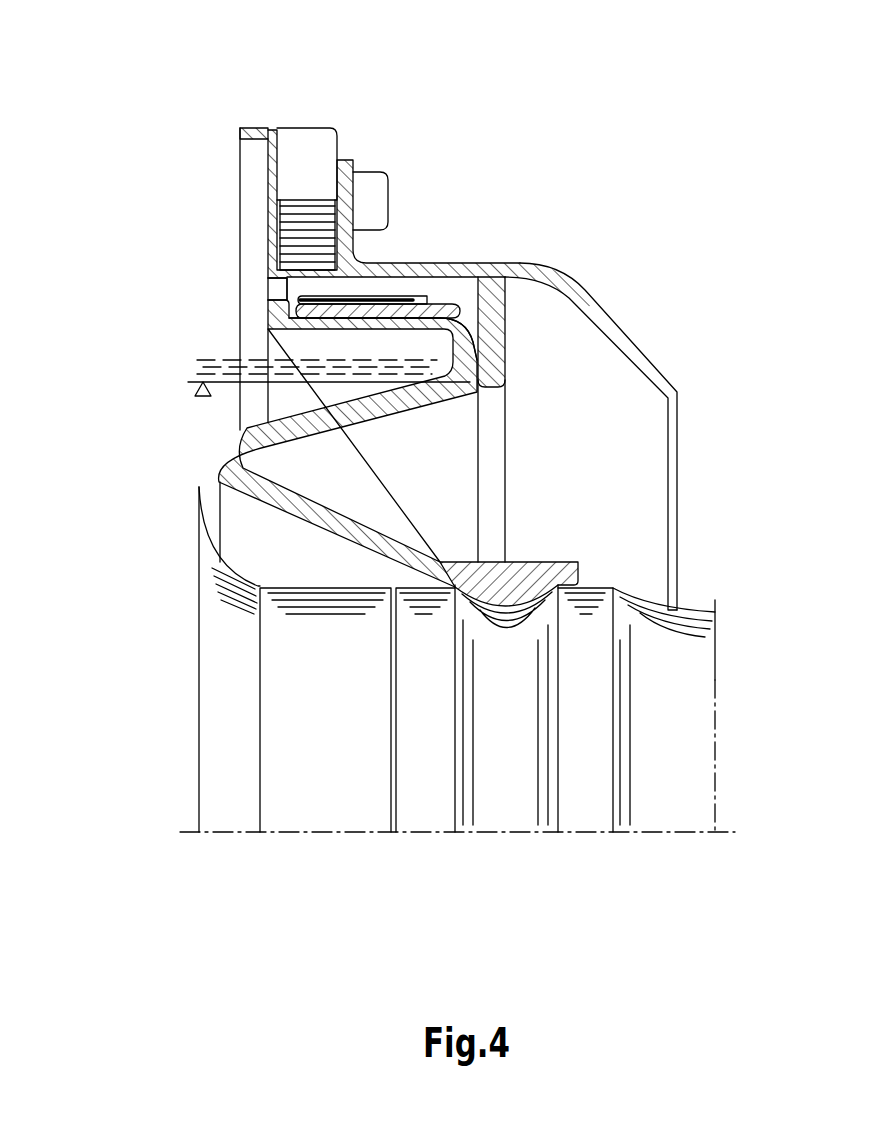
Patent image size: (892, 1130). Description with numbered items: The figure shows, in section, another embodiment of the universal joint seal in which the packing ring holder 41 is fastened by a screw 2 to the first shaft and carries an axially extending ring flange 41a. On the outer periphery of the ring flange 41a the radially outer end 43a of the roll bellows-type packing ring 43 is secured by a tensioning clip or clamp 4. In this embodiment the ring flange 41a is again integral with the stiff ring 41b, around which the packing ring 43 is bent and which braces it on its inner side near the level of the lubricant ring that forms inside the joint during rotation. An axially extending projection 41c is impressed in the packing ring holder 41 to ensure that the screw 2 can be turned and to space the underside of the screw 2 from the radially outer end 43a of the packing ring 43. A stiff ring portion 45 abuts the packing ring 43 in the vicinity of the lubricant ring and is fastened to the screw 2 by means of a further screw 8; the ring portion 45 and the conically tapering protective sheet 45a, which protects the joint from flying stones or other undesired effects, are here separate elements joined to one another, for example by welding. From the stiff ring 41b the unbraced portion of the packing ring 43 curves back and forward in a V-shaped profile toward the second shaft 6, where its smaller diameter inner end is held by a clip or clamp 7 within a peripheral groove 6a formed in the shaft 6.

The screw 2 is at (305, 138).
The tensioning clip or clamp 4 is at (360, 302).
The shaft 6 is at (465, 560).
The peripheral groove 6a is at (475, 620).
The clip or clamp 7 is at (520, 562).
The screw 8 is at (368, 177).
The packing ring holder 41 is at (253, 128).
The axially extending ring flange 41a is at (360, 328).
The ring 41b is at (507, 277).
The axially extending projection 41c is at (268, 297).
The packing ring 43 is at (453, 310).
The radially outer end of the packing ring 43a is at (427, 297).
The ring portion 45 is at (555, 377).
The protective sheet 45a is at (600, 313).